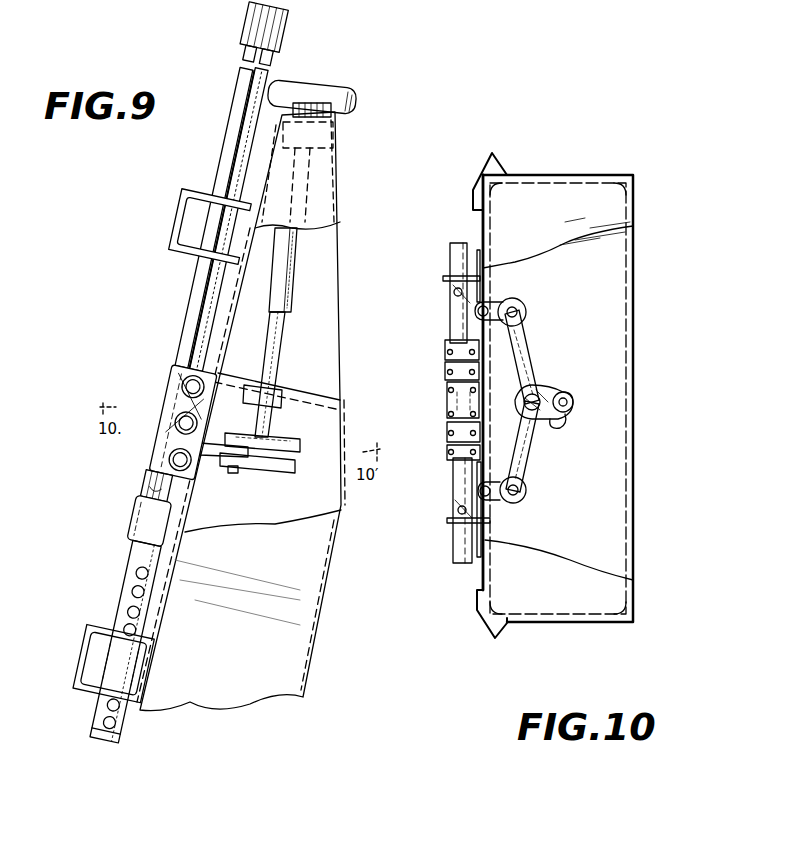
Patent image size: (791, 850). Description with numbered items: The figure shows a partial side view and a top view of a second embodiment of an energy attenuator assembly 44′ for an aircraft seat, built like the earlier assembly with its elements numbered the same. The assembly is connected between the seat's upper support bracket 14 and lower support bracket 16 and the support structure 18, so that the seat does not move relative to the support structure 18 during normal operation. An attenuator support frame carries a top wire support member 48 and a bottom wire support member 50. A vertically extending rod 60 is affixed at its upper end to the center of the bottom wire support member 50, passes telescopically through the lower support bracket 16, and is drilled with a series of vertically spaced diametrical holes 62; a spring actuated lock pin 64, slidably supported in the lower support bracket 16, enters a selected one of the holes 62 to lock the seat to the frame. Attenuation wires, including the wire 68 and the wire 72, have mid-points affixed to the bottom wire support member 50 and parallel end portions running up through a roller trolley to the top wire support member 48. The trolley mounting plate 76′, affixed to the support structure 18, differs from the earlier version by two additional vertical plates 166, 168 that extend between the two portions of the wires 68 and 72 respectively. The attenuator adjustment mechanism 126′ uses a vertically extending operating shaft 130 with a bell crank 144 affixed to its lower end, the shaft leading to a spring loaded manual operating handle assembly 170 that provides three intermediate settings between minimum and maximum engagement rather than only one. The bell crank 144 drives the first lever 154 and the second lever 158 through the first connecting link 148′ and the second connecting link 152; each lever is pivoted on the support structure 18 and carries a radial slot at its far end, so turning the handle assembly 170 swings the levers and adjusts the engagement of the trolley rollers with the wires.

In FIG. 9, the upper support bracket 14 is at (177, 218).
In FIG. 9, the lower support bracket 16 is at (86, 632).
In FIG. 9, the support structure 18 is at (308, 612).
In FIG. 10, the support structure 18 is at (558, 603).
In FIG. 9, the energy attenuator assembly 44′ is at (169, 355).
In FIG. 9, the top wire support member 48 is at (250, 15).
In FIG. 9, the bottom wire support member 50 is at (137, 522).
In FIG. 9, the vertically extending rod 60 is at (120, 734).
In FIG. 9, the diametrical holes 62 is at (100, 722).
In FIG. 9, the spring actuated lock pin 64 is at (92, 650).
In FIG. 9, the attenuator adjustment mechanism 126′ is at (271, 484).
In FIG. 9, the operating shaft 130 is at (287, 324).
In FIG. 9, the spring loaded manual operating handle assembly 170 is at (350, 92).
In FIG. 10, the bell crank 144 is at (590, 412).
In FIG. 10, the first connecting link 148′ is at (534, 352).
In FIG. 10, the second connecting link 152 is at (540, 442).
In FIG. 10, the first lever 154 is at (498, 302).
In FIG. 10, the second lever 158 is at (509, 477).
In FIG. 10, the vertical plate 166 is at (446, 350).
In FIG. 10, the attenuation wire 68 is at (447, 371).
In FIG. 10, the vertical plate 168 is at (447, 440).
In FIG. 10, the attenuation wire 72 is at (450, 458).
In FIG. 10, the trolley mounting plate 76′ is at (487, 518).